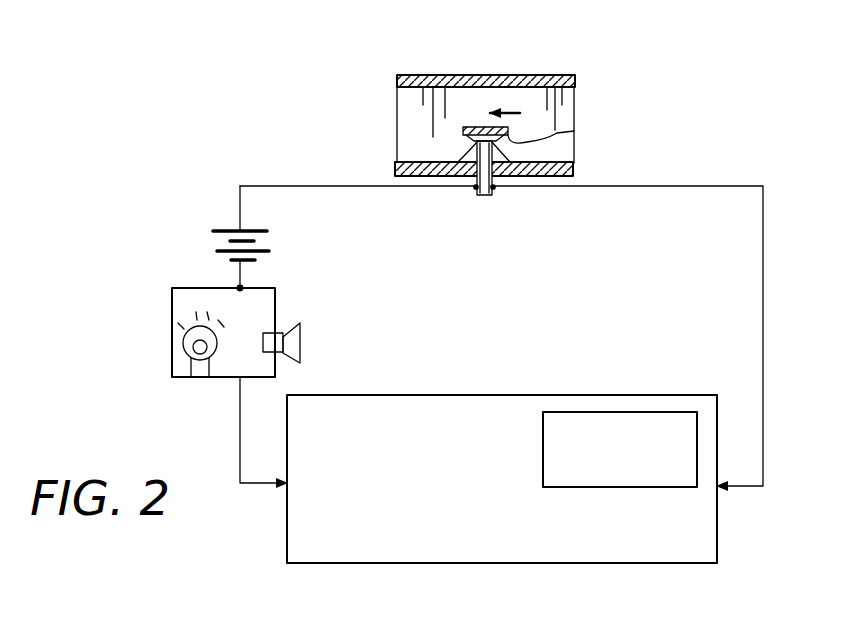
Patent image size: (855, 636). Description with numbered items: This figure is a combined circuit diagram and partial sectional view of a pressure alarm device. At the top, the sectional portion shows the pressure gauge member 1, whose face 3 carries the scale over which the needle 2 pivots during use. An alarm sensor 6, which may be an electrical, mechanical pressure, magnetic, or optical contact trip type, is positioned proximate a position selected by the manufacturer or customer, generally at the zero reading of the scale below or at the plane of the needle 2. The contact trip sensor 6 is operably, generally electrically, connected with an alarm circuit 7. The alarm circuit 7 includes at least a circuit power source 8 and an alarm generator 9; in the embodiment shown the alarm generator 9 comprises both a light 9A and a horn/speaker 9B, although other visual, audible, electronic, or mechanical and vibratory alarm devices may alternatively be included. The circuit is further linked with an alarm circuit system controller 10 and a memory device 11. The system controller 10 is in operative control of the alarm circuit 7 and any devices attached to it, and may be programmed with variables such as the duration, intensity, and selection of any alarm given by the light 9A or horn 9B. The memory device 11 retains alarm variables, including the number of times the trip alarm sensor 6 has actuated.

The pressure gauge member 1 is at (488, 91).
The needle 2 is at (473, 123).
The face 3 is at (417, 157).
The alarm sensor 6 is at (574, 131).
The alarm circuit 7 is at (232, 298).
The circuit power source 8 is at (256, 240).
The alarm generator 9 is at (232, 364).
The light 9A is at (197, 352).
The horn/speaker 9B is at (301, 343).
The alarm circuit system controller 10 is at (455, 460).
The memory device 11 is at (603, 417).